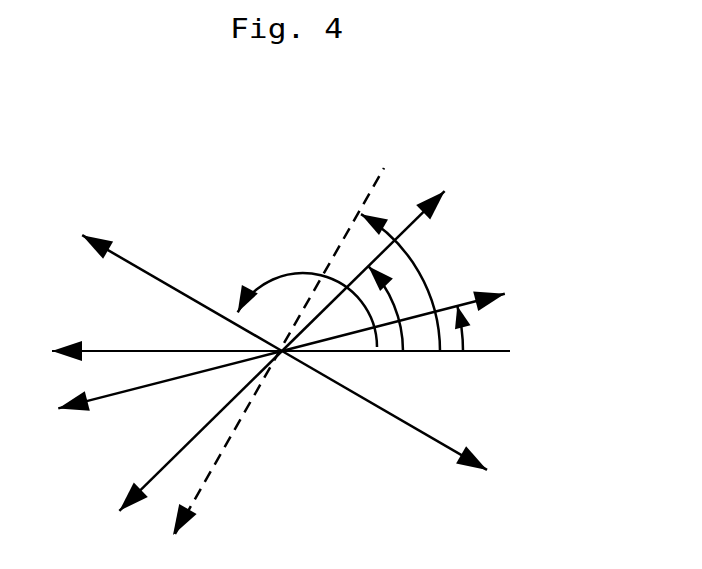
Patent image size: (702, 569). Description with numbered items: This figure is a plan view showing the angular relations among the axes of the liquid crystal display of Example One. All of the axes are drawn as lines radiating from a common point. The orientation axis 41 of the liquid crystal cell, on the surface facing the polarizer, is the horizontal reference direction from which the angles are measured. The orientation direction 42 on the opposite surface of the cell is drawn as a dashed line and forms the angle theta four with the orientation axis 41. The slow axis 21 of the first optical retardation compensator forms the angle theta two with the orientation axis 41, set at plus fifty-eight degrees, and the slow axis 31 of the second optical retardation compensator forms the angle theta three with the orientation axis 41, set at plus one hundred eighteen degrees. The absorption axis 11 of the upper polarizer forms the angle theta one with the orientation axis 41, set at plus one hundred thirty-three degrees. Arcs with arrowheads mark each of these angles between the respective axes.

The absorption axis 11 is at (301, 333).
The slow axis 21 is at (308, 362).
The slow axis 31 is at (304, 342).
The orientation axis 41 is at (307, 353).
The orientation direction 42 is at (291, 335).